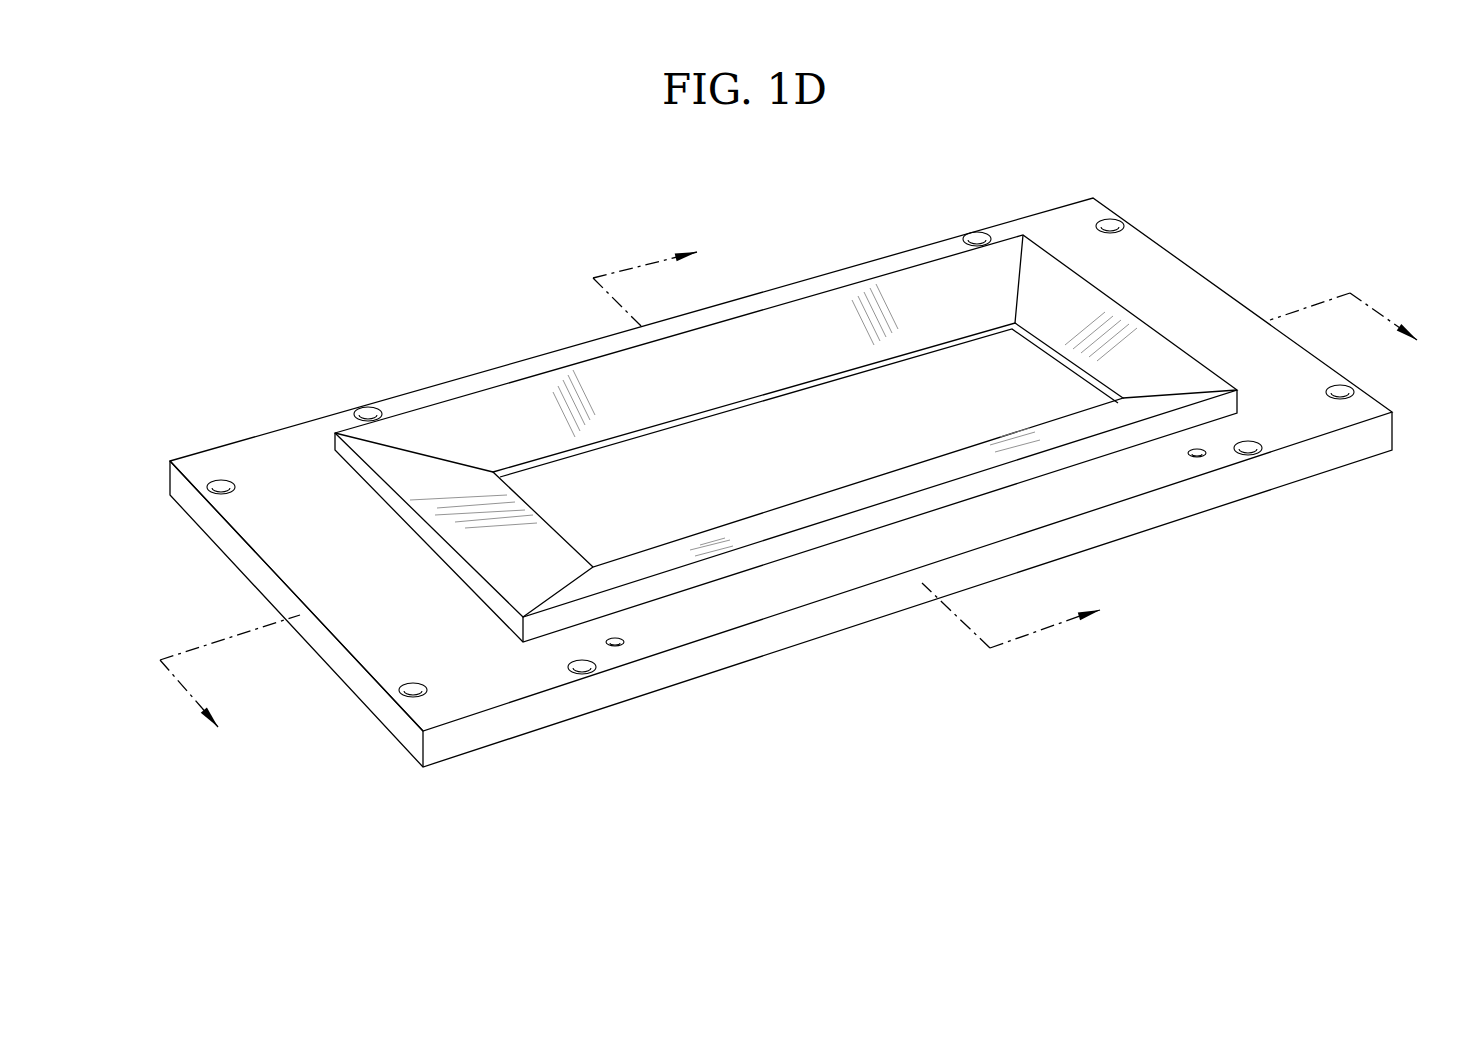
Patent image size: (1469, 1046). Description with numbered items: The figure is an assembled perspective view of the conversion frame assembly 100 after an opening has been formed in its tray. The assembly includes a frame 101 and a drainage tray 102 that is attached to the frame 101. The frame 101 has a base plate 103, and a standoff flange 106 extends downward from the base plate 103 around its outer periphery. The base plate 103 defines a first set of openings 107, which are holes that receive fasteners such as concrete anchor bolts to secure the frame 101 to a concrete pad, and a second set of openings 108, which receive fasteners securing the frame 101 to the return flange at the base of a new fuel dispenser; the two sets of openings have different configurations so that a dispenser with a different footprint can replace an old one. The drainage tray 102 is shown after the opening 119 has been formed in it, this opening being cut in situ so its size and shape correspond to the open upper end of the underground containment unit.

The conversion frame assembly 100 is at (422, 337).
The frame 101 is at (873, 648).
The drainage tray 102 is at (913, 302).
The base plate 103 is at (307, 567).
The standoff flange 106 is at (423, 767).
The first set of openings 107 is at (221, 480).
The second set of openings 108 is at (1197, 450).
The opening 119 is at (1040, 380).